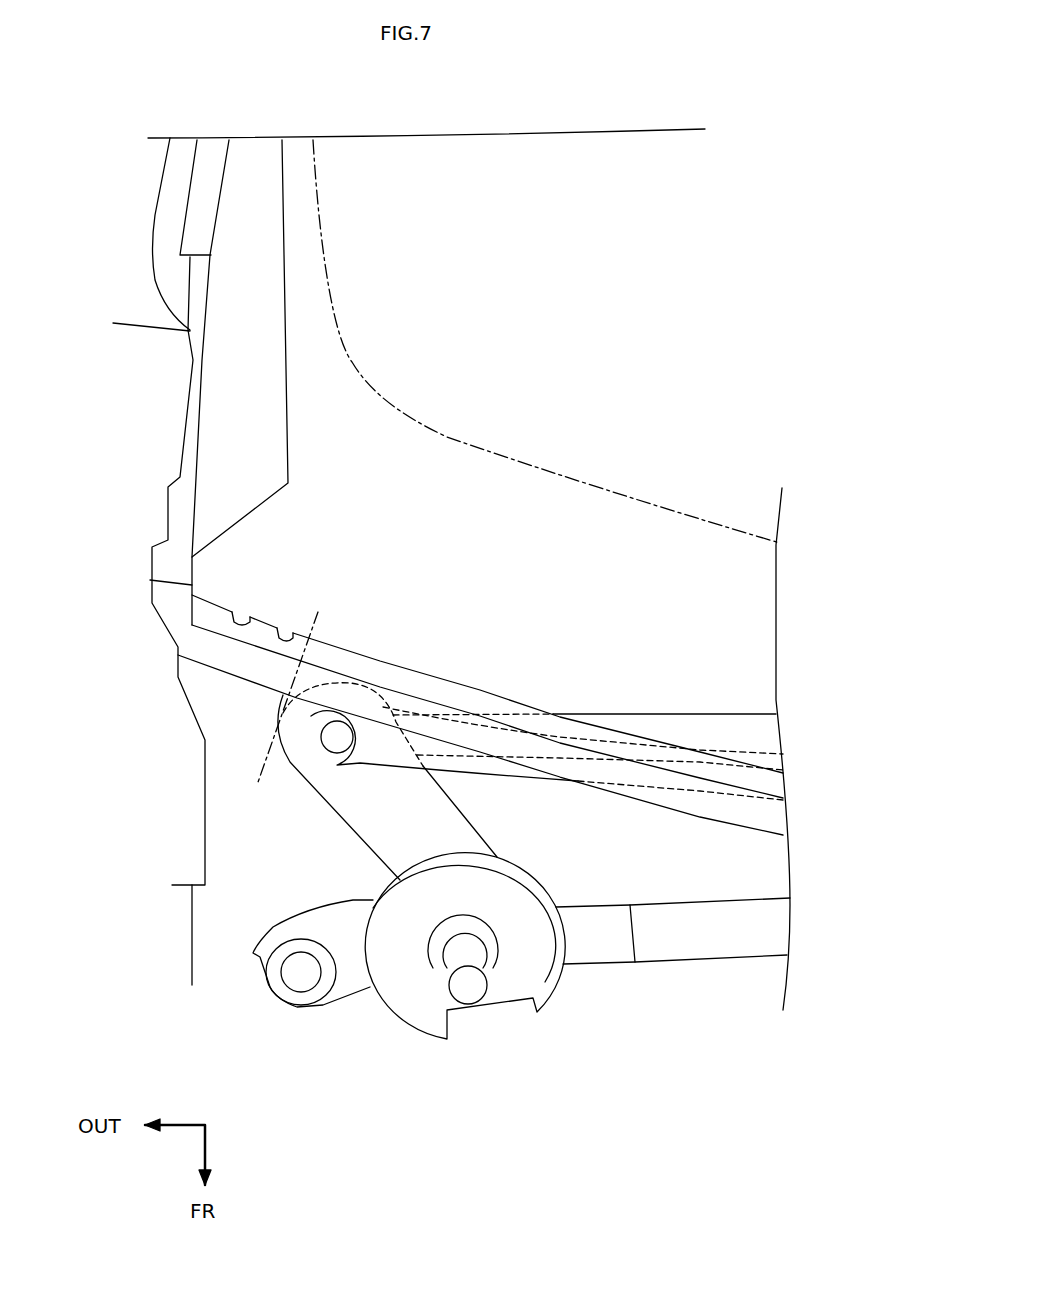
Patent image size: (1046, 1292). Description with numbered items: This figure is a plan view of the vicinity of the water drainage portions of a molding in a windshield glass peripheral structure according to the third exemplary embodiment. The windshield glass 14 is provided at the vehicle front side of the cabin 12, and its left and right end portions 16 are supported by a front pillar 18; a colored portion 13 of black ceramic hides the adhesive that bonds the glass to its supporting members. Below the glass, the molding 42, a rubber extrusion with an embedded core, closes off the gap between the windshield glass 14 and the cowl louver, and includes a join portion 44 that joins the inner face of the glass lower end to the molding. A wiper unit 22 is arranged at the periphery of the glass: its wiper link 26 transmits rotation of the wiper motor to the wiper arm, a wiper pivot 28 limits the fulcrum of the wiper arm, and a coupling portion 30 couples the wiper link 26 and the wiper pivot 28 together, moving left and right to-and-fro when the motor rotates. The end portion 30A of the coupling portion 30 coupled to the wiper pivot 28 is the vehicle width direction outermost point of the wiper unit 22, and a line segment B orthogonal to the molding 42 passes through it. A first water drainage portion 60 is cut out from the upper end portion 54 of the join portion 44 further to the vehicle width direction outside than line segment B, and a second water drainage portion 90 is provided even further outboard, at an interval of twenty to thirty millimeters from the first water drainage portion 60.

The cabin 12 is at (647, 278).
The colored portion 13 is at (437, 473).
The windshield glass 14 is at (513, 152).
The left and right end portions 16 is at (250, 160).
The front pillars 18 is at (179, 160).
The wiper unit 22 is at (495, 1035).
The wiper link 26 is at (702, 722).
The wiper pivot 28 is at (445, 968).
The coupling portion 30 is at (347, 818).
The end portion 30A is at (273, 737).
The molding 42 is at (517, 694).
The join portion 44 is at (455, 697).
The upper end portion 54 is at (405, 665).
The first water drainage portion 60 is at (287, 632).
The second water drainage portion 90 is at (242, 612).
The line segment B is at (257, 773).